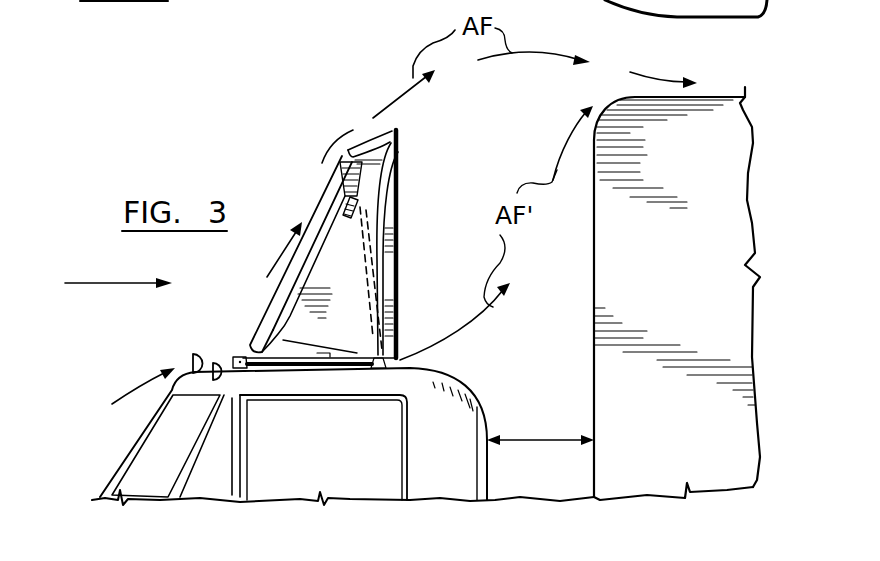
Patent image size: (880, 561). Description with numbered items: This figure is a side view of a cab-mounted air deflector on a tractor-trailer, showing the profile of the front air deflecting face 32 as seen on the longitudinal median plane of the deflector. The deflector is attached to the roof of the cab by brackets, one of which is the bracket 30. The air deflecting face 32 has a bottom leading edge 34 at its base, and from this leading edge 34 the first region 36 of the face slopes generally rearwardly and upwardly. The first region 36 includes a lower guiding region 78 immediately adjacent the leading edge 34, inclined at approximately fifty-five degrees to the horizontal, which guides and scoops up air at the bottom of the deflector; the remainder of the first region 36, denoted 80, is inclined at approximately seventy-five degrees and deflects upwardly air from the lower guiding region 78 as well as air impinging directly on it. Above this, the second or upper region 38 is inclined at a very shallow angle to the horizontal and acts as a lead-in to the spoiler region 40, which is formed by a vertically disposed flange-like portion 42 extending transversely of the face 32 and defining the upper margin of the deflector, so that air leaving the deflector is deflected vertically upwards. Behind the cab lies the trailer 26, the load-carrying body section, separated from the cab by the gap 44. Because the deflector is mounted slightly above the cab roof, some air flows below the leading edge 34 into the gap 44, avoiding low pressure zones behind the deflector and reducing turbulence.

The trailer 26 is at (677, 293).
The bracket 30 is at (388, 280).
The front air deflecting face 32 is at (330, 208).
The bottom leading edge 34 is at (243, 352).
The first region 36 is at (286, 240).
The second or upper region 38 is at (363, 143).
The spoiler region 40 is at (392, 122).
The flange-like portion 42 is at (398, 137).
The gap 44 is at (540, 426).
The lower guiding region 78 is at (320, 369).
The remainder of first region 80 is at (345, 247).